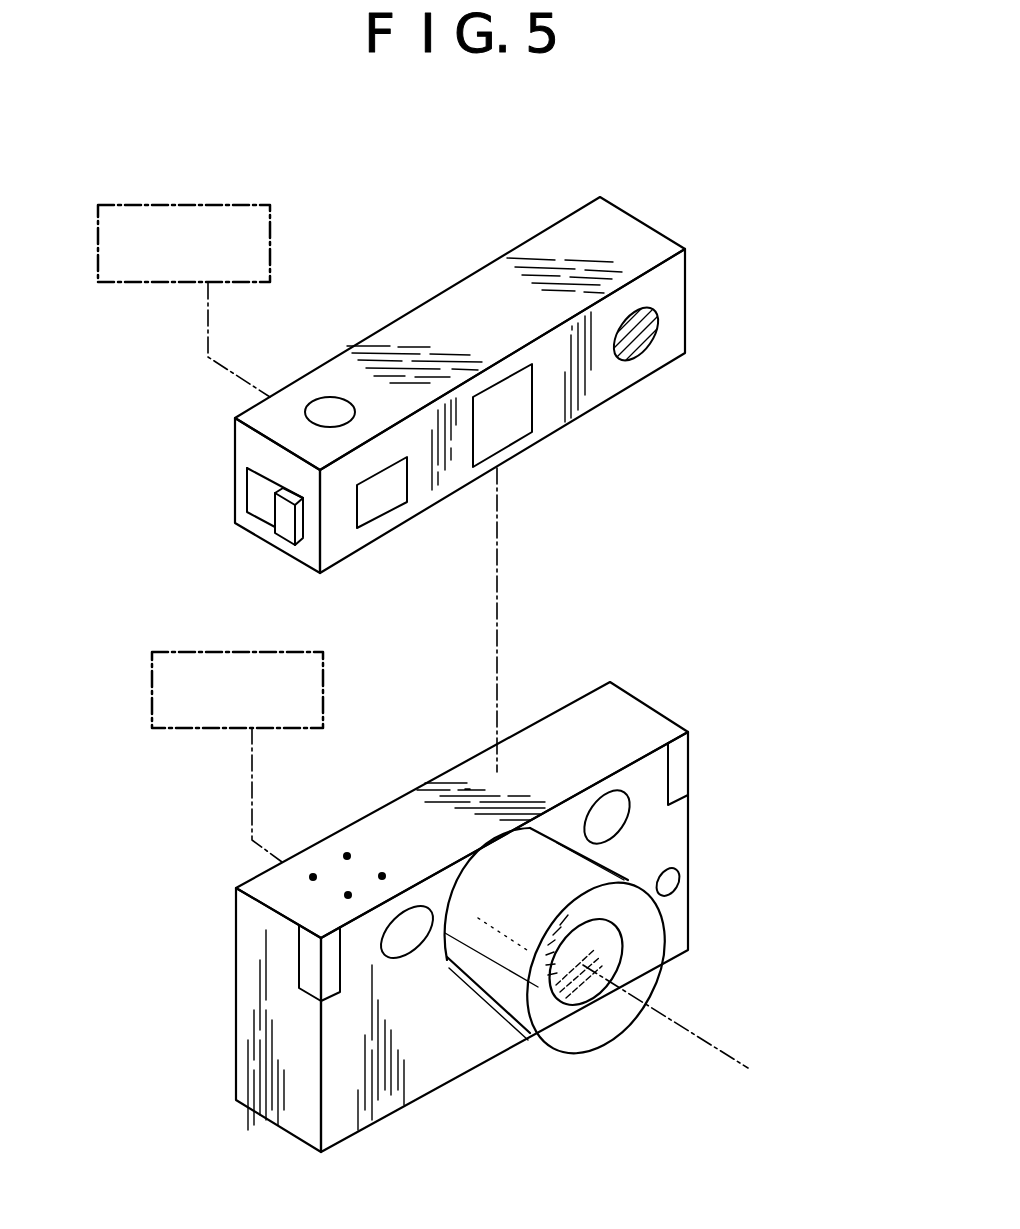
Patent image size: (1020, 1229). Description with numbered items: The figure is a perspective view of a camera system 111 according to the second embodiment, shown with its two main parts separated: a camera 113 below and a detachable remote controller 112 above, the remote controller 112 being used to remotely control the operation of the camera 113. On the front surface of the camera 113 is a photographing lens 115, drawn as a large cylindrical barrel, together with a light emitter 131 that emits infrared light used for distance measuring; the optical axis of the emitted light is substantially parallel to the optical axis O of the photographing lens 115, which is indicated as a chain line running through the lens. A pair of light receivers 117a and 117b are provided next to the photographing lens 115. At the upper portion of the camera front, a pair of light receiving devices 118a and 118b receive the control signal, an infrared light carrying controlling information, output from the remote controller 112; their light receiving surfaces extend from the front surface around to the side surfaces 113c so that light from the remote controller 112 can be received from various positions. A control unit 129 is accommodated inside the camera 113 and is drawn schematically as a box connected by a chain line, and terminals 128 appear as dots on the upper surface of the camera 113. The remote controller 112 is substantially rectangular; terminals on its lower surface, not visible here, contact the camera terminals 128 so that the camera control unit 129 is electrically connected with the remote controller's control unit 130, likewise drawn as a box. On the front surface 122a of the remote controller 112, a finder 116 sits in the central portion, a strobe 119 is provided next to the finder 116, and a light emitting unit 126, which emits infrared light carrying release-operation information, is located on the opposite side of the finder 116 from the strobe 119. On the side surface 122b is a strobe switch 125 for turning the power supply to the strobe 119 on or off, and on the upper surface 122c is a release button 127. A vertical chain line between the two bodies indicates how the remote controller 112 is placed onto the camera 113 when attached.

The camera system 111 is at (703, 220).
The remote controller 112 is at (616, 236).
The camera 113 is at (632, 720).
The side surfaces 113c is at (697, 826).
The photographing lens 115 is at (503, 1007).
The finder 116 is at (511, 425).
The light receiver 117a is at (412, 935).
The light receiver 117b is at (600, 815).
The light receiving device 118a is at (305, 968).
The light receiving device 118b is at (680, 757).
The strobe 119 is at (378, 505).
The front surface 122a is at (672, 290).
The side surface 122b is at (247, 447).
The upper surface 122c is at (430, 323).
The strobe switch 125 is at (287, 528).
The light emitting unit 126 is at (648, 345).
The release button 127 is at (328, 408).
The terminals 128 is at (382, 876).
The control unit 129 is at (325, 708).
The control unit 130 is at (270, 267).
The light emitter 131 is at (670, 884).
The optical axis O is at (714, 1035).